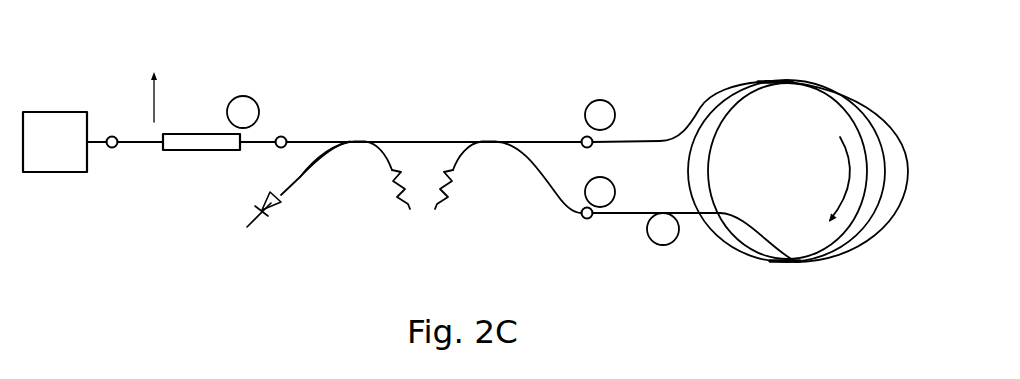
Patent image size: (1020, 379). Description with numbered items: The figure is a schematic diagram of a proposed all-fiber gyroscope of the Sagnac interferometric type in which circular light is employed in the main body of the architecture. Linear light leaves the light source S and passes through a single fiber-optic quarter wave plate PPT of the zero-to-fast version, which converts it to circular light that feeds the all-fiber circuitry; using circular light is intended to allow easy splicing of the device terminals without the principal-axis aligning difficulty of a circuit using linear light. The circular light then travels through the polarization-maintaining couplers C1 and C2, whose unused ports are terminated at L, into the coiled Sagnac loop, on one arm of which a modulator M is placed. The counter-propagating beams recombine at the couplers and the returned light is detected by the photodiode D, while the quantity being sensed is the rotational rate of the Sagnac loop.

The light source S is at (55, 142).
The fiber-optic quarter wave plate PPT is at (197, 166).
The polarization-maintaining coupler C1 is at (346, 132).
The polarization-maintaining coupler C2 is at (517, 150).
The fiber termination L is at (422, 206).
The photodiode D is at (298, 189).
The modulator M is at (652, 250).
The element Sagnac loop is at (877, 102).